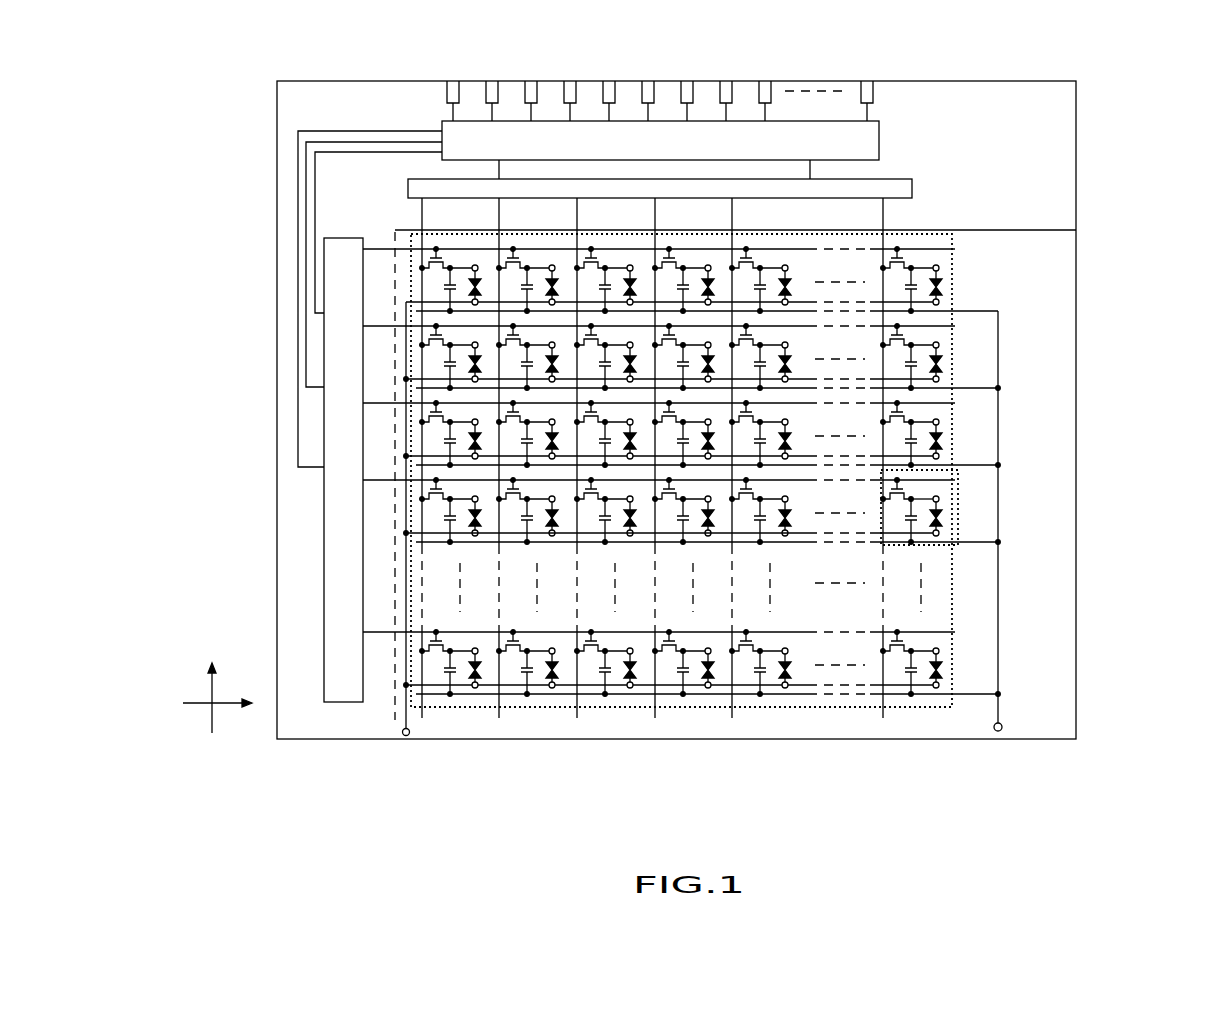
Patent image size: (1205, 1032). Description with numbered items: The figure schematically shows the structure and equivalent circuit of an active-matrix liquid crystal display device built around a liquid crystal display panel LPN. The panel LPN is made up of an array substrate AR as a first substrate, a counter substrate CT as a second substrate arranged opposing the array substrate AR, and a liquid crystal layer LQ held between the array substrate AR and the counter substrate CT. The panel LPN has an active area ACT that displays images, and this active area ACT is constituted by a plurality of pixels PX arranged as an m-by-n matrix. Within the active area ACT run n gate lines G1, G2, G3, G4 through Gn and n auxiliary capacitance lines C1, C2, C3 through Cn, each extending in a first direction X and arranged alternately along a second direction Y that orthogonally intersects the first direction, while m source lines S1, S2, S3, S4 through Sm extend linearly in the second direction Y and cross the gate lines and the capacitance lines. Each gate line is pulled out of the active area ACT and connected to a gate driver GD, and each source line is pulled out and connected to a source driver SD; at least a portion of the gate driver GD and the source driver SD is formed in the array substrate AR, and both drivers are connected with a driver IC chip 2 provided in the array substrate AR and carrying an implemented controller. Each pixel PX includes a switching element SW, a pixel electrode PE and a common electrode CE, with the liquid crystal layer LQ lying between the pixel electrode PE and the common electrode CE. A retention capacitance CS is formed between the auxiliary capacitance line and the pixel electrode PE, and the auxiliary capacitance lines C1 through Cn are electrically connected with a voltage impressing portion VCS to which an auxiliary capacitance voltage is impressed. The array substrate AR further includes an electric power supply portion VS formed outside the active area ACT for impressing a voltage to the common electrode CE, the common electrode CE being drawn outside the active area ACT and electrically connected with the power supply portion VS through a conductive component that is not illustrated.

The liquid crystal display panel LPN is at (1098, 94).
The driver IC chip 2 is at (879, 120).
The source driver SD is at (914, 188).
The gate driver GD is at (325, 573).
The counter substrate CT is at (1043, 230).
The array substrate AR is at (343, 731).
The active area ACT is at (953, 334).
The gate line G1 is at (377, 247).
The gate line G2 is at (377, 324).
The gate line G3 is at (377, 401).
The gate line G4 is at (377, 478).
The gate line Gn is at (377, 630).
The source line S1 is at (425, 219).
The source line S2 is at (502, 219).
The source line S3 is at (580, 219).
The source line S4 is at (658, 219).
The source line Sm is at (886, 219).
The auxiliary capacitance line C1 is at (974, 308).
The auxiliary capacitance line C2 is at (974, 385).
The auxiliary capacitance line C3 is at (974, 462).
The auxiliary capacitance line Cn is at (977, 692).
The pixel PX is at (723, 511).
The switching element SW is at (889, 488).
The retention capacitance CS is at (902, 517).
The pixel electrode PE is at (941, 495).
The liquid crystal layer LQ is at (943, 513).
The common electrode CE is at (943, 531).
The electric power supply portion VS is at (410, 736).
The voltage impressing portion VCS is at (1005, 721).